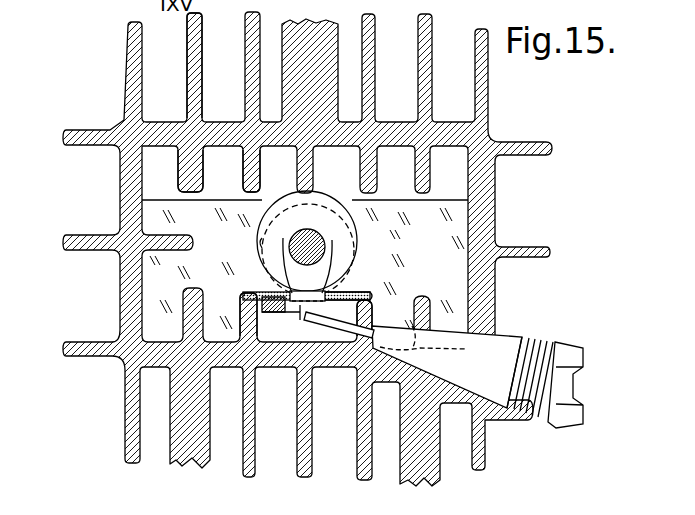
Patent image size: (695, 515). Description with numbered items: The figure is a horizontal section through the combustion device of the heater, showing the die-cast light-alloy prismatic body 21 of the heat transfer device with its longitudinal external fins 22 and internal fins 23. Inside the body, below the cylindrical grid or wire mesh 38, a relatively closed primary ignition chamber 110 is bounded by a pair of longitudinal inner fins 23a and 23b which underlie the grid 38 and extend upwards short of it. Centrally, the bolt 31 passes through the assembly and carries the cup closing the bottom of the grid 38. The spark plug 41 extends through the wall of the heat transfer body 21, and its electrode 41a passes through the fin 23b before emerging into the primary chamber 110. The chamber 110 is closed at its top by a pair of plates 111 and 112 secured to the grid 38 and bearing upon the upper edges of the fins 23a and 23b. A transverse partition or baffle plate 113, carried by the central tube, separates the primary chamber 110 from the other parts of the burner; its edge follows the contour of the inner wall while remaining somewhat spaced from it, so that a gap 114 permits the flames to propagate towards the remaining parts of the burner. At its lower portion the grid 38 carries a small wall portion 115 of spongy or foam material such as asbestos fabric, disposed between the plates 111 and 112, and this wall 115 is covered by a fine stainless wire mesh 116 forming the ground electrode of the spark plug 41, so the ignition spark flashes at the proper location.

The prismatic body 21 is at (134, 190).
The external fins 22 is at (187, 72).
The internal fins 23 is at (250, 173).
The longitudinal inner fin 23a is at (247, 301).
The longitudinal inner fin 23b is at (366, 350).
The bolt 31 is at (307, 240).
The cylindrical grid or wire mesh 38 is at (258, 236).
The primary ignition chamber 110 is at (297, 332).
The plate 111 is at (262, 292).
The plate 112 is at (350, 296).
The transverse partition or baffle plate 113 is at (388, 217).
The gap 114 is at (305, 347).
The wall portion of spongy or foam material 115 is at (307, 241).
The fine stainless wire mesh 116 is at (317, 290).
The spark plug 41 is at (445, 363).
The electrode 41a is at (343, 331).